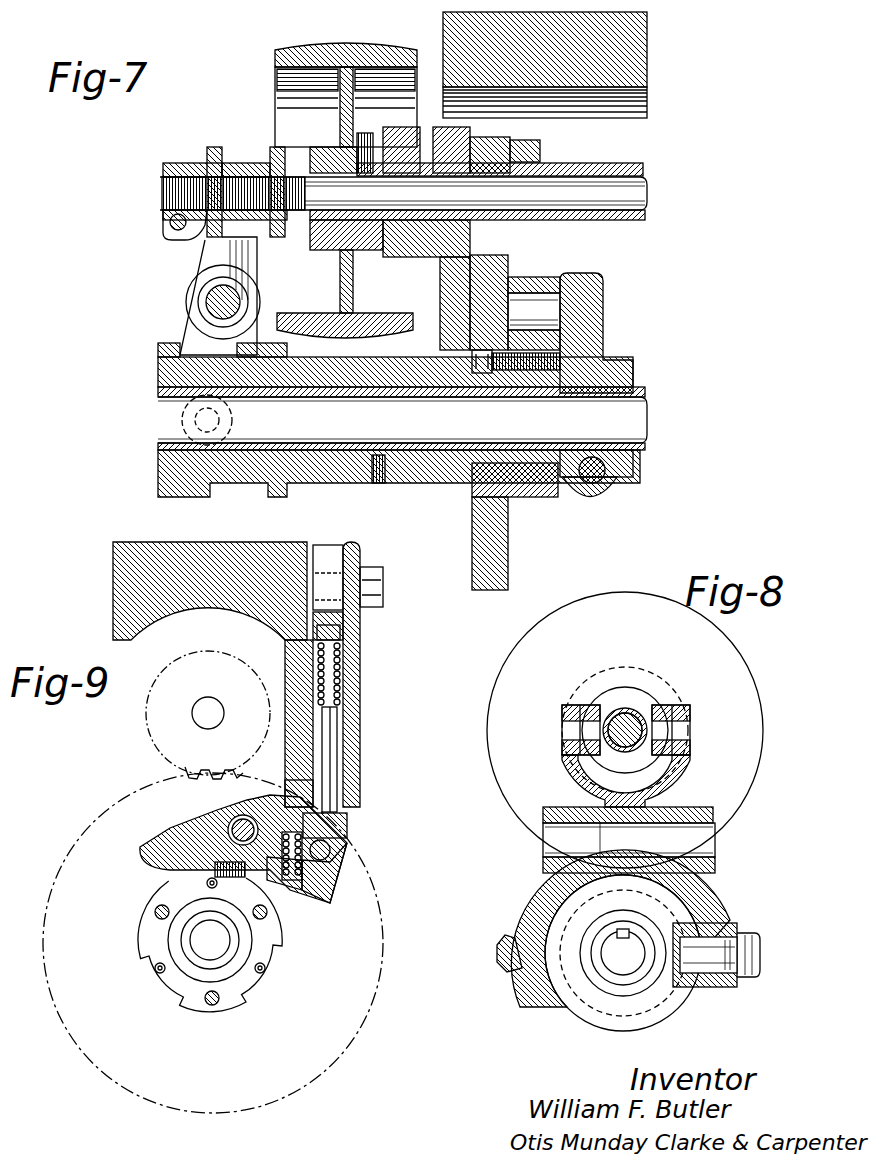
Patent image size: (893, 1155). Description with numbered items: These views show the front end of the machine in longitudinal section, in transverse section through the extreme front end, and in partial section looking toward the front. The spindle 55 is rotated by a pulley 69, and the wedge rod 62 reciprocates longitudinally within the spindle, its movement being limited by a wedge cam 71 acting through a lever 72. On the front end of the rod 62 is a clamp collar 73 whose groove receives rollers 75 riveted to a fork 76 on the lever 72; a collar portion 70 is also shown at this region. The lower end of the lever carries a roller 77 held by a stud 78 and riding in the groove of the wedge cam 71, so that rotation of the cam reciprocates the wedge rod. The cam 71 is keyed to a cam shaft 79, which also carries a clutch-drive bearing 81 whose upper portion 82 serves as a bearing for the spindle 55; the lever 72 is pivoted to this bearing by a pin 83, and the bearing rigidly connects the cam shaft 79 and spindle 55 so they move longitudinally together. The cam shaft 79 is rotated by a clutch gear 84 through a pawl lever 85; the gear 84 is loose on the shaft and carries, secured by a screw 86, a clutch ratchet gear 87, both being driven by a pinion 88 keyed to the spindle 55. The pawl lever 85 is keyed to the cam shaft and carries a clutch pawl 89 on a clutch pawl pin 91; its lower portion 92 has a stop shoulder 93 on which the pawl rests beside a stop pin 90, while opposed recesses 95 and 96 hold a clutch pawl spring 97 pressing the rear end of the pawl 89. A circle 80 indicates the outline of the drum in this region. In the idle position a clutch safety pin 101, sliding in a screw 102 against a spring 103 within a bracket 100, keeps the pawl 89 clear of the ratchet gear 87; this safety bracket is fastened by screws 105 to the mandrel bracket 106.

In FIG. 7, the spindle 55 is at (603, 166).
In FIG. 9, the spindle 55 is at (194, 716).
In FIG. 7, the wedge rod 62 is at (625, 191).
In FIG. 8, the wedge rod 62 is at (625, 712).
In FIG. 7, the pulley 69 is at (378, 52).
In FIG. 7, the bearing collar 70 is at (263, 176).
In FIG. 7, the wedge cam 71 is at (175, 497).
In FIG. 7, the lever 72 is at (215, 259).
In FIG. 8, the lever 72 is at (690, 884).
In FIG. 7, the clamp collar 73 is at (209, 166).
In FIG. 8, the clamp collar 73 is at (644, 702).
In FIG. 7, the rollers 75 is at (264, 180).
In FIG. 8, the rollers 75 is at (581, 705).
In FIG. 8, the fork 76 is at (687, 766).
In FIG. 8, the roller 77 is at (706, 987).
In FIG. 8, the stud 78 is at (706, 950).
In FIG. 7, the cam shaft 79 is at (166, 429).
In FIG. 9, the cam shaft 79 is at (204, 946).
In FIG. 8, the cam shaft 79 is at (615, 962).
In FIG. 9, the wheel 80 is at (368, 906).
In FIG. 7, the clutch-drive bearing 81 is at (414, 479).
In FIG. 8, the clutch-drive bearing 81 is at (503, 964).
In FIG. 7, the upper portion 82 is at (420, 262).
In FIG. 7, the pin 83 is at (206, 306).
In FIG. 8, the pin 83 is at (703, 838).
In FIG. 7, the clutch gear 84 is at (472, 571).
In FIG. 7, the pawl lever 85 is at (610, 483).
In FIG. 9, the pawl lever 85 is at (340, 881).
In FIG. 7, the screw 86 is at (486, 356).
In FIG. 7, the clutch ratchet gear 87 is at (520, 498).
In FIG. 9, the clutch ratchet gear 87 is at (148, 926).
In FIG. 7, the pinion 88 is at (512, 146).
In FIG. 9, the pinion 88 is at (225, 690).
In FIG. 9, the clutch pawl 89 is at (178, 832).
In FIG. 9, the pin 90 is at (332, 853).
In FIG. 9, the clutch pawl pin 91 is at (290, 786).
In FIG. 9, the lower portion 92 is at (305, 843).
In FIG. 9, the stop shoulder 93 is at (346, 821).
In FIG. 9, the recess 95 is at (217, 884).
In FIG. 9, the recess 96 is at (238, 880).
In FIG. 9, the clutch pawl spring 97 is at (286, 896).
In FIG. 9, the bracket 100 is at (352, 768).
In FIG. 9, the clutch safety pin 101 is at (340, 731).
In FIG. 9, the screw 102 is at (345, 633).
In FIG. 9, the spring 103 is at (342, 673).
In FIG. 9, the screws 105 is at (376, 590).
In FIG. 7, the mandrel bracket 106 is at (628, 68).
In FIG. 9, the mandrel bracket 106 is at (255, 556).